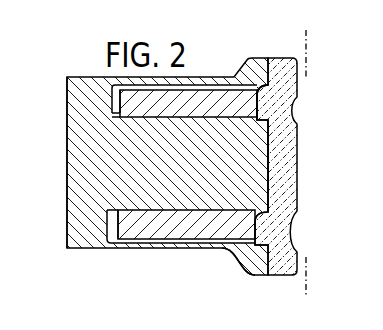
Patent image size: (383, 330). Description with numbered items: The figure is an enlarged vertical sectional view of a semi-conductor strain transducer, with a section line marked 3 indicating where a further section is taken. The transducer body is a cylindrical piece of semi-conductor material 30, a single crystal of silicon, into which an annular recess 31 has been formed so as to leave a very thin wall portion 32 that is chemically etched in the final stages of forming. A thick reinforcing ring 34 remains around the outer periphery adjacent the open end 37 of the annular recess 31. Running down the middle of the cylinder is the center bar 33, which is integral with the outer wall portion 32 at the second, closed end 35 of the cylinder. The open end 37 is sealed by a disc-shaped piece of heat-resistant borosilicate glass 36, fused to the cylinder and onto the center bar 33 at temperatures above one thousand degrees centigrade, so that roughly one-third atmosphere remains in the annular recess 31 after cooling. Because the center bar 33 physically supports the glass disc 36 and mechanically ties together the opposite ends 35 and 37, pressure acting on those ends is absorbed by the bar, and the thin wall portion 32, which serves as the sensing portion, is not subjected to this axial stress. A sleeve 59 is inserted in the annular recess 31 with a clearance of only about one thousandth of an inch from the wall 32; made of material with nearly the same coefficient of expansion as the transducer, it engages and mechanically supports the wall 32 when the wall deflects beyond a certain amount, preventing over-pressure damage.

The semi-conductor material 30 is at (82, 182).
The annular recess 31 is at (227, 88).
The thin wall portion 32 is at (145, 245).
The center bar 33 is at (217, 200).
The reinforcing ring 34 is at (256, 262).
The closed end 35 is at (82, 213).
The glass disc 36 is at (298, 117).
The open end 37 is at (268, 185).
The sleeve 59 is at (247, 104).
The section line 3- 3 is at (307, 287).